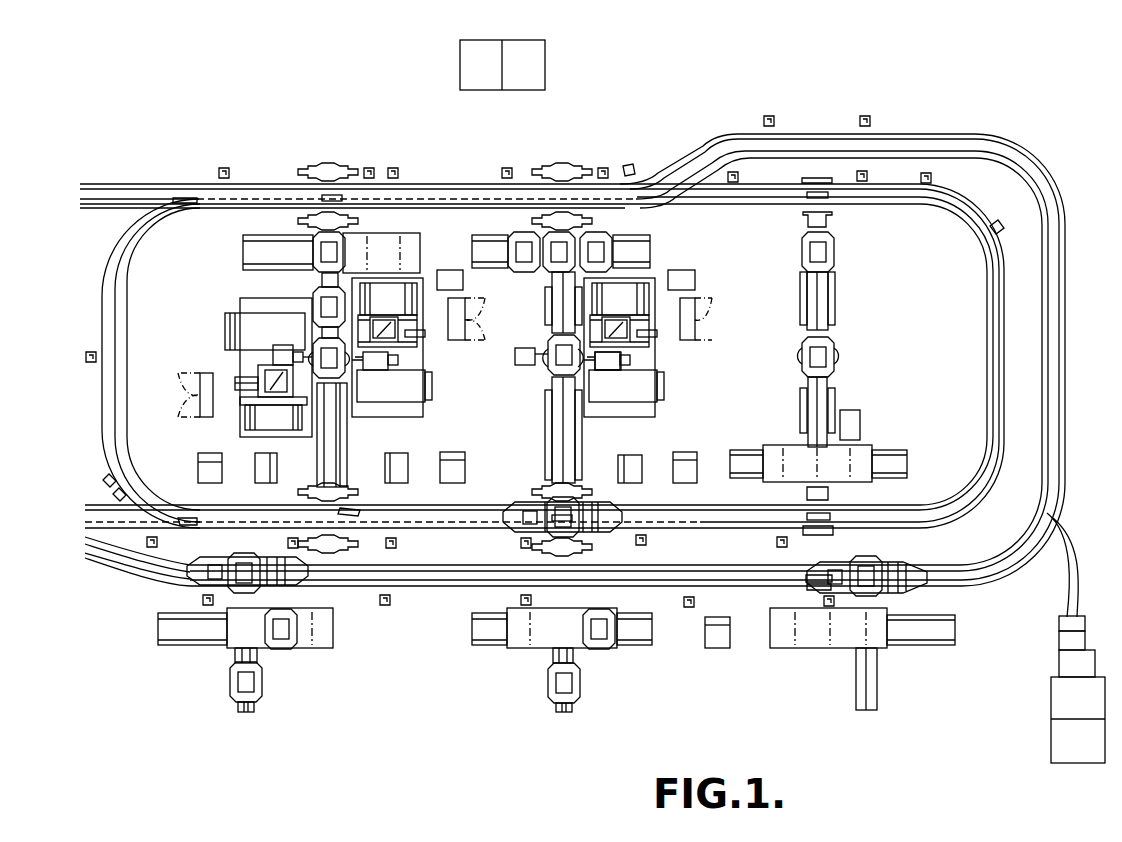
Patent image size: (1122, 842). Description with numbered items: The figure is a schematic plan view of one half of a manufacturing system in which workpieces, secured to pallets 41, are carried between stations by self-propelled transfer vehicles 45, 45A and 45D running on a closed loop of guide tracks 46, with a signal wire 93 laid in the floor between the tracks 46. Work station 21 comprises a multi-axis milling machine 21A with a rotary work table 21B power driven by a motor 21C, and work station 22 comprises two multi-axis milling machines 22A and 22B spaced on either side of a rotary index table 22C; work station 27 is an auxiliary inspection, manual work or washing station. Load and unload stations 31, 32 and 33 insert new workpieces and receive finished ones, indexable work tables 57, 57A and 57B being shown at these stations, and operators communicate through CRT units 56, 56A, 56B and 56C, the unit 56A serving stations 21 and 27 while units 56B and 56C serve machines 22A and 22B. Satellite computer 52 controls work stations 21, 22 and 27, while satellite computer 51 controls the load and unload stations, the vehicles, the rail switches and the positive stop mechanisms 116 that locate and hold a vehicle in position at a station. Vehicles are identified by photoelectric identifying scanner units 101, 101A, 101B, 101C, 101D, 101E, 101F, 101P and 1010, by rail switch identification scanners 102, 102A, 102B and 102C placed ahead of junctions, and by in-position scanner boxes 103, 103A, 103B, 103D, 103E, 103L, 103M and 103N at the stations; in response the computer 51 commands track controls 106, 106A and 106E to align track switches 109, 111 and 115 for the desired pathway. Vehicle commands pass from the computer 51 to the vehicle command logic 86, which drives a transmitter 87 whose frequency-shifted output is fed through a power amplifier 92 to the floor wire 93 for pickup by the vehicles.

The satellite computer 52 is at (545, 80).
The rail switch identification scanner 102 is at (770, 120).
The identifying scanner unit 101 is at (866, 120).
The switch 111 is at (177, 196).
The track control 106A is at (228, 172).
The sensor 103A is at (369, 168).
The rail switch identification point 102A is at (393, 172).
The identification point 101A is at (507, 168).
The track control 106 is at (635, 166).
The track switch 109 is at (650, 183).
The in position scanner box 103 is at (600, 170).
The sensor 101F is at (733, 176).
The sensor 103E is at (863, 178).
The sensor 102C is at (927, 182).
The sensor 101E is at (996, 226).
The wire 93 is at (1060, 290).
The tracks 46 is at (1042, 325).
The positive stop mechanism 116 is at (342, 200).
The pallet 41 is at (312, 298).
The work station 22 is at (253, 293).
The multi-axis milling machine 22A is at (380, 358).
The multi-axis milling machine 22B is at (265, 378).
The rotary index table 22C is at (332, 370).
The work station 21 is at (668, 362).
The station unit 21A is at (610, 355).
The rotary work table 21B is at (546, 372).
The motor 21C is at (546, 354).
The work station 27 is at (836, 358).
The sensor 102B is at (88, 358).
The sensor 101B is at (105, 480).
The sensor 106E is at (114, 494).
The CRT unit 56C is at (210, 475).
The CRT unit 56B is at (463, 480).
The CRT unit 56A is at (680, 470).
The CRT unit 56 is at (716, 648).
The track switch 115 is at (188, 524).
The transfer vehicle 45D is at (525, 510).
The sensor 103B is at (288, 543).
The sensor 101C is at (396, 544).
The sensor 101D is at (643, 540).
The sensor 103D is at (777, 543).
The sensor 103L is at (203, 601).
The transfer vehicle 45A is at (288, 598).
The sensor 103M is at (521, 600).
The sensor 101P is at (690, 605).
The sensor 103N is at (825, 601).
The self-propelled vehicle 45 is at (927, 564).
The sensor 1010 is at (288, 584).
The load and unload station 31 is at (226, 652).
The conveyor section 57B is at (335, 645).
The conveyor section 57A is at (518, 645).
The load and unload station 32 is at (584, 665).
The indexable work table 57 is at (818, 645).
The load and unload station 33 is at (882, 656).
The interface unit 92 is at (1064, 620).
The transmitter 87 is at (1064, 641).
The vehicle command logic 86 is at (1064, 665).
The satellite computer 51 is at (1062, 740).